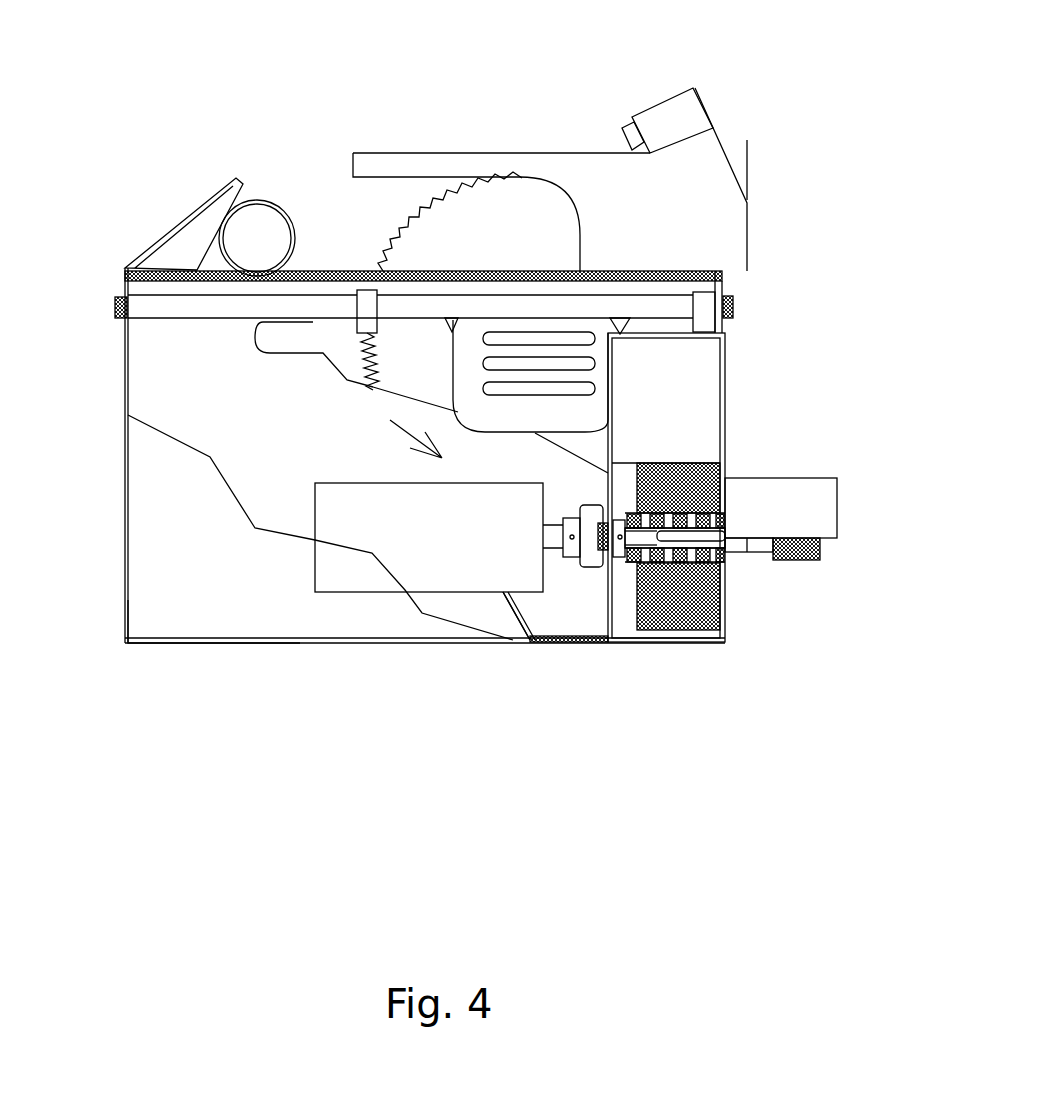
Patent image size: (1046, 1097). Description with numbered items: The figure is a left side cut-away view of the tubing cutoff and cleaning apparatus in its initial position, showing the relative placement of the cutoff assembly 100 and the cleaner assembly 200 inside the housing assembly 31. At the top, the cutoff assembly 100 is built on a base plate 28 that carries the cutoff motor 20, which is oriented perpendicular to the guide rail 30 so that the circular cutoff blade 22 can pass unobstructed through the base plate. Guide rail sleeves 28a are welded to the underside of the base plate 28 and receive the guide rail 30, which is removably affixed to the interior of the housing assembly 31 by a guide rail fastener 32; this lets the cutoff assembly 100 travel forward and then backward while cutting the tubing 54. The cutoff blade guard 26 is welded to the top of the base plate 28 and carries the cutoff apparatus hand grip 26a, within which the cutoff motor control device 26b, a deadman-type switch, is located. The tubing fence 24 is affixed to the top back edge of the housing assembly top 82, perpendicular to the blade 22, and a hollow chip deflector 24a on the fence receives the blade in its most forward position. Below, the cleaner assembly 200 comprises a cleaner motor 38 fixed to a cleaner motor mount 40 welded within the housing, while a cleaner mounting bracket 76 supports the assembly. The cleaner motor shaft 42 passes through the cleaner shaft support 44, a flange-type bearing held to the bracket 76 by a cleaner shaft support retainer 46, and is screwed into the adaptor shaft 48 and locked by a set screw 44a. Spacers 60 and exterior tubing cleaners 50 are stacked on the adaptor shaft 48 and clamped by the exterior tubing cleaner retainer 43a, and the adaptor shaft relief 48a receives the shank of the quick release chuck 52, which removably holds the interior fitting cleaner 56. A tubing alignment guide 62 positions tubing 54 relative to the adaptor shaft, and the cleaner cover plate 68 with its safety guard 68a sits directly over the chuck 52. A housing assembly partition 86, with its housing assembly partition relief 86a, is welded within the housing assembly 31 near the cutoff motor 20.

The cutoff assembly 100 is at (768, 130).
The cutoff motor 20 is at (467, 370).
The circular cutoff blade 22 is at (447, 233).
The tubing fence 24 is at (123, 267).
The chip deflector 24a is at (190, 230).
The cutoff blade guard 26 is at (540, 163).
The cutoff apparatus hand grip 26a is at (667, 107).
The cutoff motor control device 26b is at (630, 128).
The base plate 28 is at (147, 285).
The guide rail sleeve 28a is at (363, 305).
The guide rail 30 is at (222, 315).
The housing assembly 31 is at (157, 565).
The guide rail fastener 32 is at (115, 305).
The cleaner motor 38 is at (372, 530).
The cleaner motor mount 40 is at (505, 600).
The cleaner motor shaft 42 is at (553, 530).
The exterior tubing cleaner retainer 43a is at (722, 513).
The cleaner shaft support 44 is at (607, 570).
The set screw 44a is at (620, 527).
The cleaner shaft support retainer 46 is at (600, 542).
The adaptor shaft 48 is at (618, 597).
The adaptor shaft relief 48a is at (712, 578).
The exterior tubing cleaner 50 is at (720, 467).
The quick release chuck 52 is at (727, 550).
The tubing 54 is at (268, 203).
The interior fitting cleaner 56 is at (838, 547).
The spacer 60 is at (638, 548).
The tubing alignment guide 62 is at (707, 413).
The cleaner cover plate 68 is at (727, 628).
The safety guard 68a is at (817, 522).
The cleaner mounting bracket 76 is at (630, 545).
The housing assembly top 82 is at (697, 270).
The housing assembly partition 86 is at (145, 362).
The housing assembly partition relief 86a is at (300, 343).
The cleaner assembly 200 is at (397, 429).